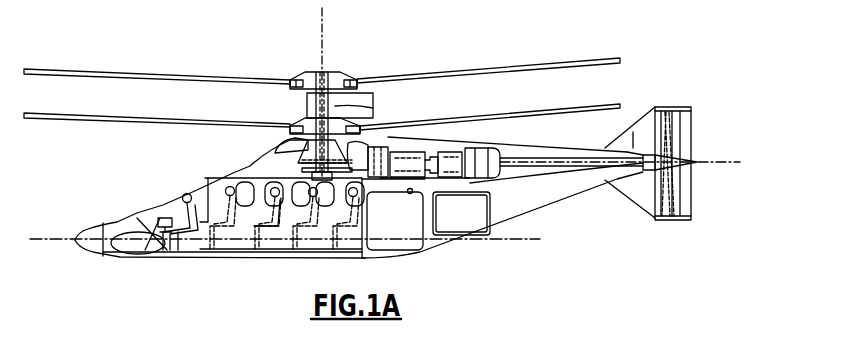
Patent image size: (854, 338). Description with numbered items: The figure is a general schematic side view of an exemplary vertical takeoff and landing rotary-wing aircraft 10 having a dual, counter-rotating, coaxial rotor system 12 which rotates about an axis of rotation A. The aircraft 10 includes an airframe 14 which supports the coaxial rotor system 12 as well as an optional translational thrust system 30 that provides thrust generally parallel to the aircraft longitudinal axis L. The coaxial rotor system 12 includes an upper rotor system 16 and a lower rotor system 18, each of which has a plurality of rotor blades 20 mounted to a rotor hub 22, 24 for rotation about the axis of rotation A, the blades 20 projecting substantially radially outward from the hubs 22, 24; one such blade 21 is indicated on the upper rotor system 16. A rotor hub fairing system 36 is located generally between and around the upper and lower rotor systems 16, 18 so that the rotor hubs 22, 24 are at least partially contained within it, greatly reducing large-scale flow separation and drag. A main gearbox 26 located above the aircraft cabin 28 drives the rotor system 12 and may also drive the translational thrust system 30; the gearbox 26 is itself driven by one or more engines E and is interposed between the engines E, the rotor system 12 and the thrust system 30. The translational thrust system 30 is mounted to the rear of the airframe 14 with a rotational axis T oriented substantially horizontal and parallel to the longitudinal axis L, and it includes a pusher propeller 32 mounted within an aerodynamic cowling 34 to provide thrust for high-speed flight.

The rotary-wing aircraft 10 is at (502, 46).
The coaxial rotor system 12 is at (371, 64).
The airframe 14 is at (218, 170).
The upper rotor system 16 is at (306, 62).
The lower rotor system 18 is at (280, 115).
The rotor blades 20 is at (438, 118).
The rotor blade 21 is at (290, 78).
The rotor hub 22 is at (340, 72).
The rotor hub 24 is at (373, 107).
The main gearbox 26 is at (280, 155).
The aircraft cabin 28 is at (272, 243).
The translational thrust system 30 is at (703, 128).
The pusher propeller 32 is at (670, 143).
The aerodynamic cowling 34 is at (668, 107).
The rotor hub fairing system 36 is at (297, 101).
The axis of rotation A is at (323, 26).
The engines E is at (460, 152).
The aircraft longitudinal axis L is at (538, 239).
The rotational axis T is at (723, 165).